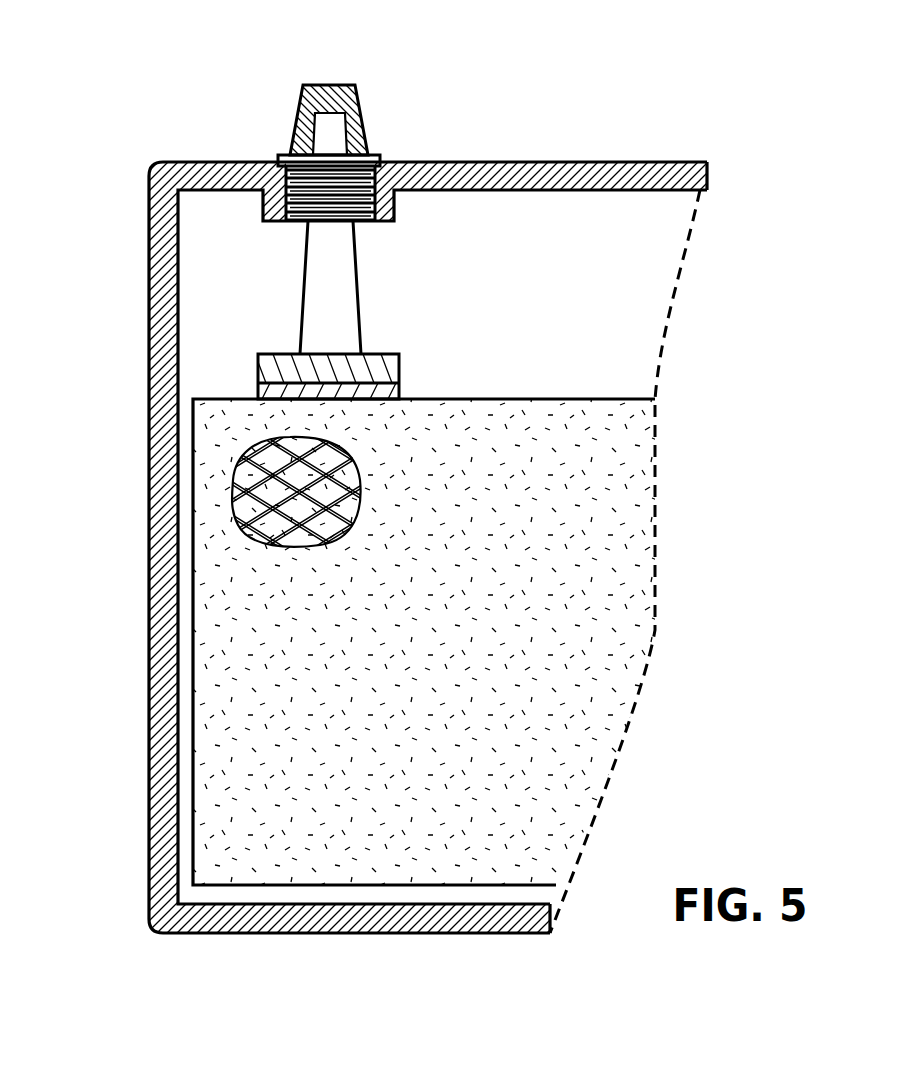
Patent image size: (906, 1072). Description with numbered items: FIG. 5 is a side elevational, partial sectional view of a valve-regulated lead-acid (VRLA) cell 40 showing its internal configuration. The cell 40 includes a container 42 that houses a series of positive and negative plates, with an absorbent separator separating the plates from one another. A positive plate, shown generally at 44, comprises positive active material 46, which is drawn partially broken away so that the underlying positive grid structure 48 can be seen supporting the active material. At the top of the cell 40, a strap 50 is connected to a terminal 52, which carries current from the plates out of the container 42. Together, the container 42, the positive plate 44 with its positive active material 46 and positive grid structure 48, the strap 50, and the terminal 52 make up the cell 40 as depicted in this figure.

The cell 40 is at (773, 252).
The container 42 is at (162, 828).
The positive plate 44 is at (662, 452).
The positive active material 46 is at (446, 546).
The positive grid structure 48 is at (253, 475).
The strap 50 is at (383, 372).
The terminal 52 is at (295, 117).